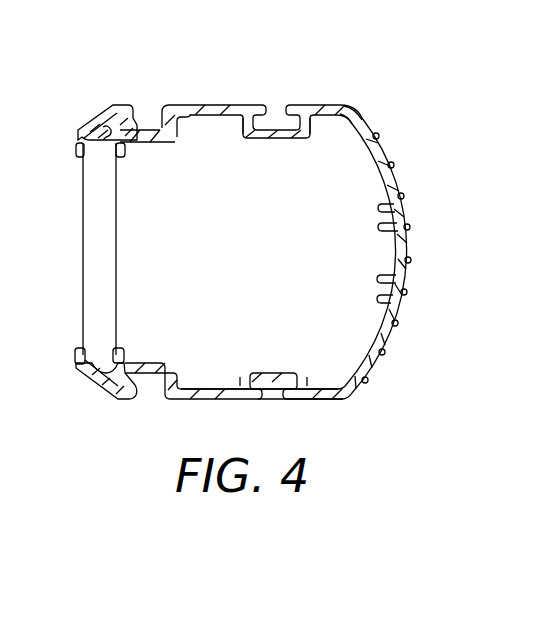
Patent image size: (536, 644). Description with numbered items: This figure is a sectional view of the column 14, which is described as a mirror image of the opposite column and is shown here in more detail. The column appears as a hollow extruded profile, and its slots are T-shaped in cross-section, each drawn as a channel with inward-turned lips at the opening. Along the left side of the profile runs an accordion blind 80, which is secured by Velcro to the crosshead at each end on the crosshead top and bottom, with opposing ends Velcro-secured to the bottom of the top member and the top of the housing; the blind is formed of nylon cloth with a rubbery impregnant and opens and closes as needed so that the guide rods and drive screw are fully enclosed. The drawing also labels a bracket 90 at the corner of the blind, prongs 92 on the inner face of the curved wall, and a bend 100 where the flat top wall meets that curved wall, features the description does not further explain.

The column 14 is at (390, 402).
The accordion blind 80 is at (90, 253).
The bracket 90 is at (113, 105).
The prongs 92 is at (402, 209).
The bend 100 is at (372, 116).